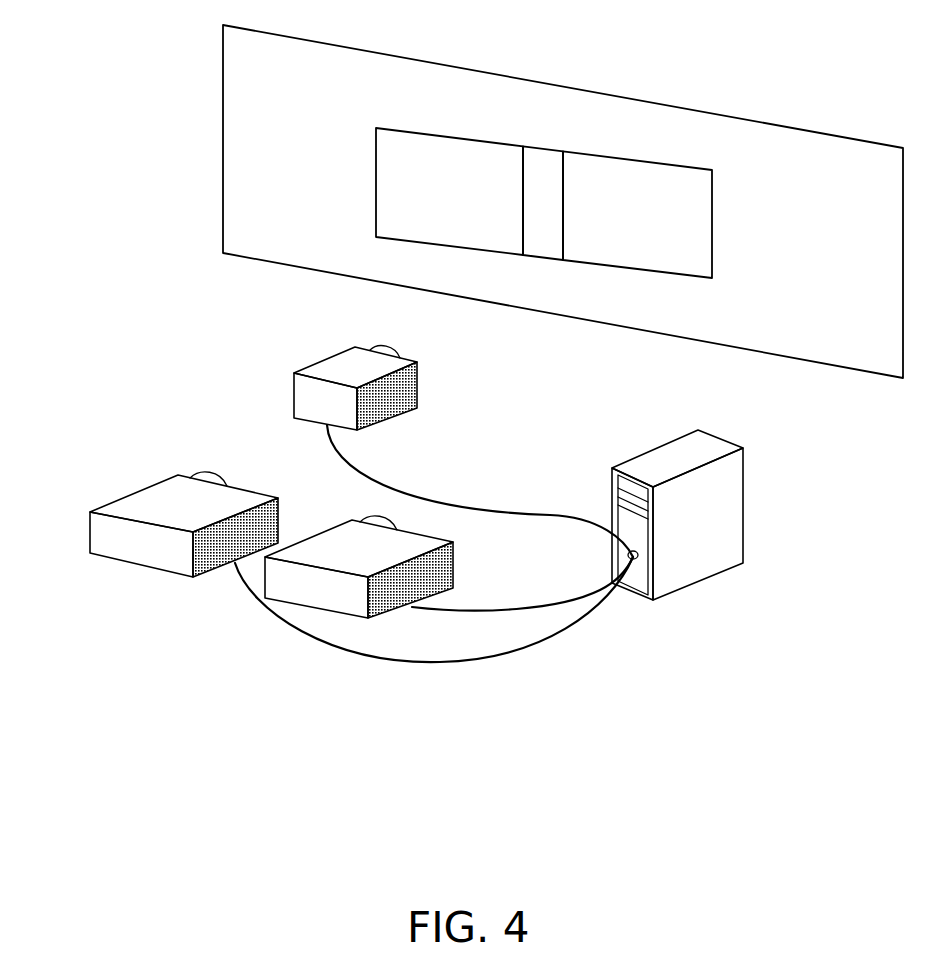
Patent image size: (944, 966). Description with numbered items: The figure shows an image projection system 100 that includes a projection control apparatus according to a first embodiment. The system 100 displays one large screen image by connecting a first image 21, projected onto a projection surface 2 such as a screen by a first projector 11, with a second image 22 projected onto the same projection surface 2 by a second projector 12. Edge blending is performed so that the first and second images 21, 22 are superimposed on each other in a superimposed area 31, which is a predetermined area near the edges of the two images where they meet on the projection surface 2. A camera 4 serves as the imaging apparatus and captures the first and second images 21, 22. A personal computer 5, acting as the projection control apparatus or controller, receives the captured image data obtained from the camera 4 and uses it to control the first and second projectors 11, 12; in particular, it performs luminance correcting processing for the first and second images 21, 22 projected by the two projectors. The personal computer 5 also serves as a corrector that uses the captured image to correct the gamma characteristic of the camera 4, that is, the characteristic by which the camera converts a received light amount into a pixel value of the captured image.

The projection surface 2 is at (519, 78).
The first image 21 is at (388, 202).
The second image 22 is at (702, 257).
The superimposed area 31 is at (547, 233).
The camera 4 is at (307, 400).
The personal computer 5 is at (738, 522).
The first projector 11 is at (100, 548).
The second projector 12 is at (273, 587).
The image projection system 100 is at (453, 685).